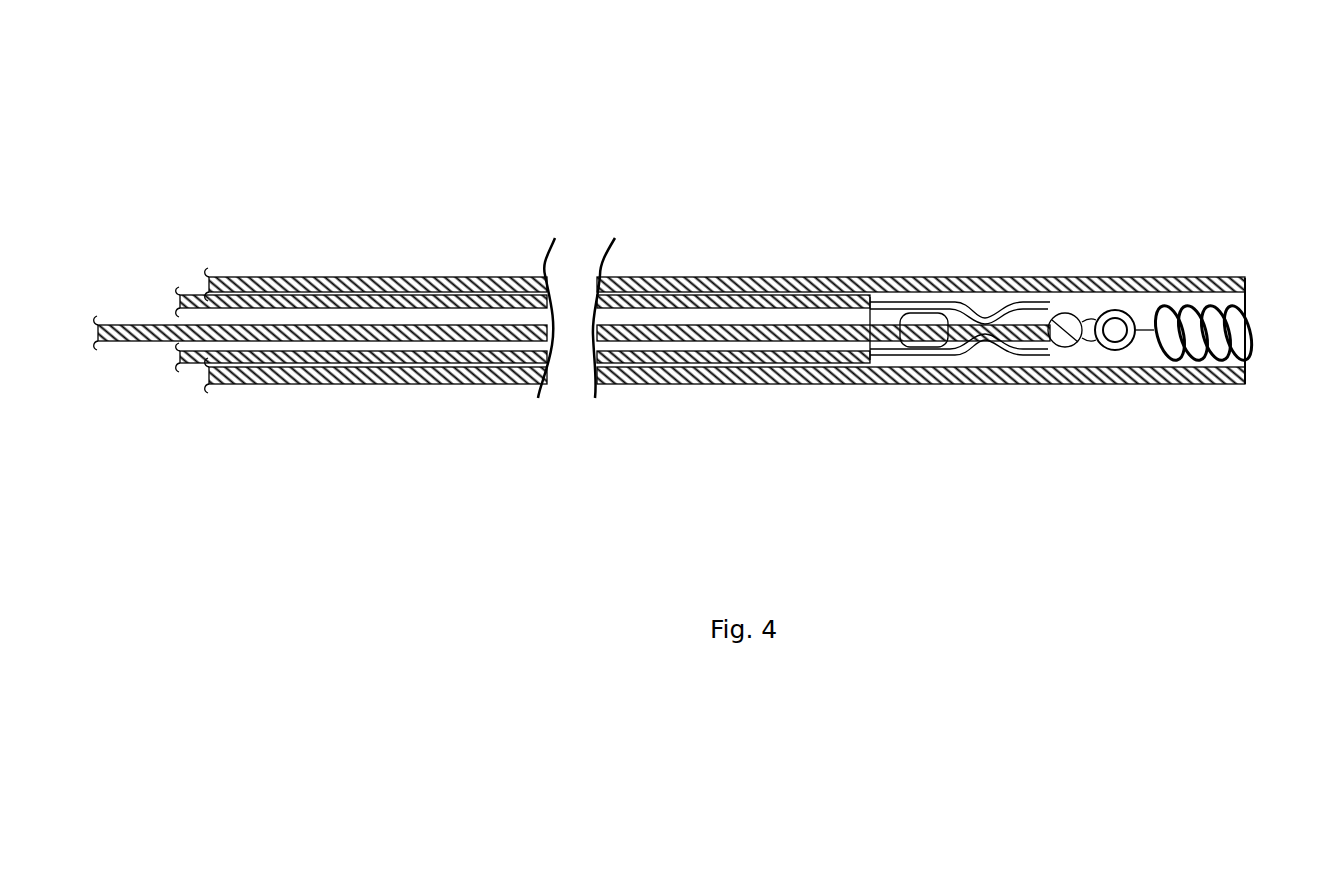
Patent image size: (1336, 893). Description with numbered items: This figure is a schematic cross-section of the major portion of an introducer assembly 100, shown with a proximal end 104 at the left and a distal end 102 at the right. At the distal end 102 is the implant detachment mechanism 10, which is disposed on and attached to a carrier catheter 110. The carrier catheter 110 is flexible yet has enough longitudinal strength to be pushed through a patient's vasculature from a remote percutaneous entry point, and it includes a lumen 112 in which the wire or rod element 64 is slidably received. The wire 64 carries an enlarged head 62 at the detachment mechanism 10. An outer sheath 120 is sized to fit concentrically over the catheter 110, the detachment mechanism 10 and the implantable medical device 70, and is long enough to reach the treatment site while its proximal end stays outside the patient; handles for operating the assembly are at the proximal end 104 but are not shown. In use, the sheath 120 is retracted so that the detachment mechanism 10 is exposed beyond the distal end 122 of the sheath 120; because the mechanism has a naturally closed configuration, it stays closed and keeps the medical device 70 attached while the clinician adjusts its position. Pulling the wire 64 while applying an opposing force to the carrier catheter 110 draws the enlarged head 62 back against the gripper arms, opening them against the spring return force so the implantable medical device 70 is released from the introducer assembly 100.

The implant detachment mechanism 10 is at (1045, 368).
The enlarged head 62 is at (1070, 330).
The wire or rod element 64 is at (262, 333).
The implantable medical device 70 is at (1212, 360).
The introducer assembly 100 is at (862, 173).
The distal end 102 is at (1095, 330).
The proximal end 104 is at (175, 147).
The carrier catheter 110 is at (382, 358).
The lumen 112 is at (438, 308).
The outer sheath 120 is at (682, 280).
The distal end of the sheath 122 is at (1242, 282).